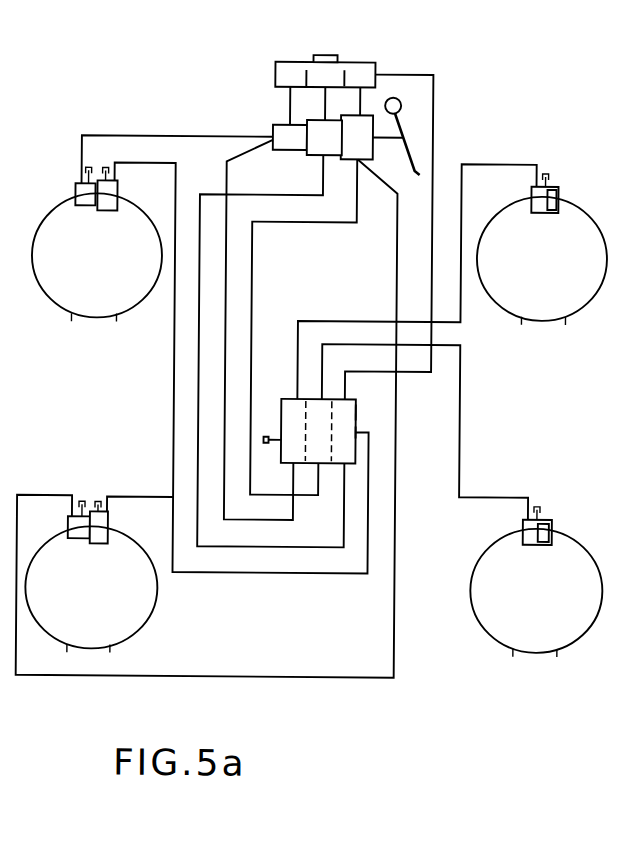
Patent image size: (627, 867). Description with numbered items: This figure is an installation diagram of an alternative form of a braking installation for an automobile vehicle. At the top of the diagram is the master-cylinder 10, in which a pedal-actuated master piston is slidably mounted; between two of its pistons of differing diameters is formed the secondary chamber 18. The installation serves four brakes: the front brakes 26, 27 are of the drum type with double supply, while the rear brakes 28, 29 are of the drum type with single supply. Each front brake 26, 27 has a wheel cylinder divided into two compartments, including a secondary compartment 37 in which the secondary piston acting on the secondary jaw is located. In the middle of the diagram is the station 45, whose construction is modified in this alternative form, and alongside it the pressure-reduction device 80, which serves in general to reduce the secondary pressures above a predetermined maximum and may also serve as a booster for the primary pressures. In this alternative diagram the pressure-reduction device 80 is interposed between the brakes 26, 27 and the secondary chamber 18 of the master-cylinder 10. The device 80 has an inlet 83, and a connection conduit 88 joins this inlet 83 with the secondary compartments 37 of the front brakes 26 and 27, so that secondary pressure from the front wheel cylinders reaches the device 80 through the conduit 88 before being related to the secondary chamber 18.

The secondary chamber 18 is at (337, 151).
The master-cylinder 10 is at (370, 150).
The secondary compartment 37 is at (111, 192).
The front brake 26 is at (113, 268).
The front brake 27 is at (108, 601).
The rear brake 28 is at (568, 267).
The rear brake 29 is at (561, 601).
The station 45 is at (281, 410).
The pressure-reduction device 80 is at (356, 413).
The inlet 83 is at (356, 431).
The connection conduit 88 is at (319, 574).